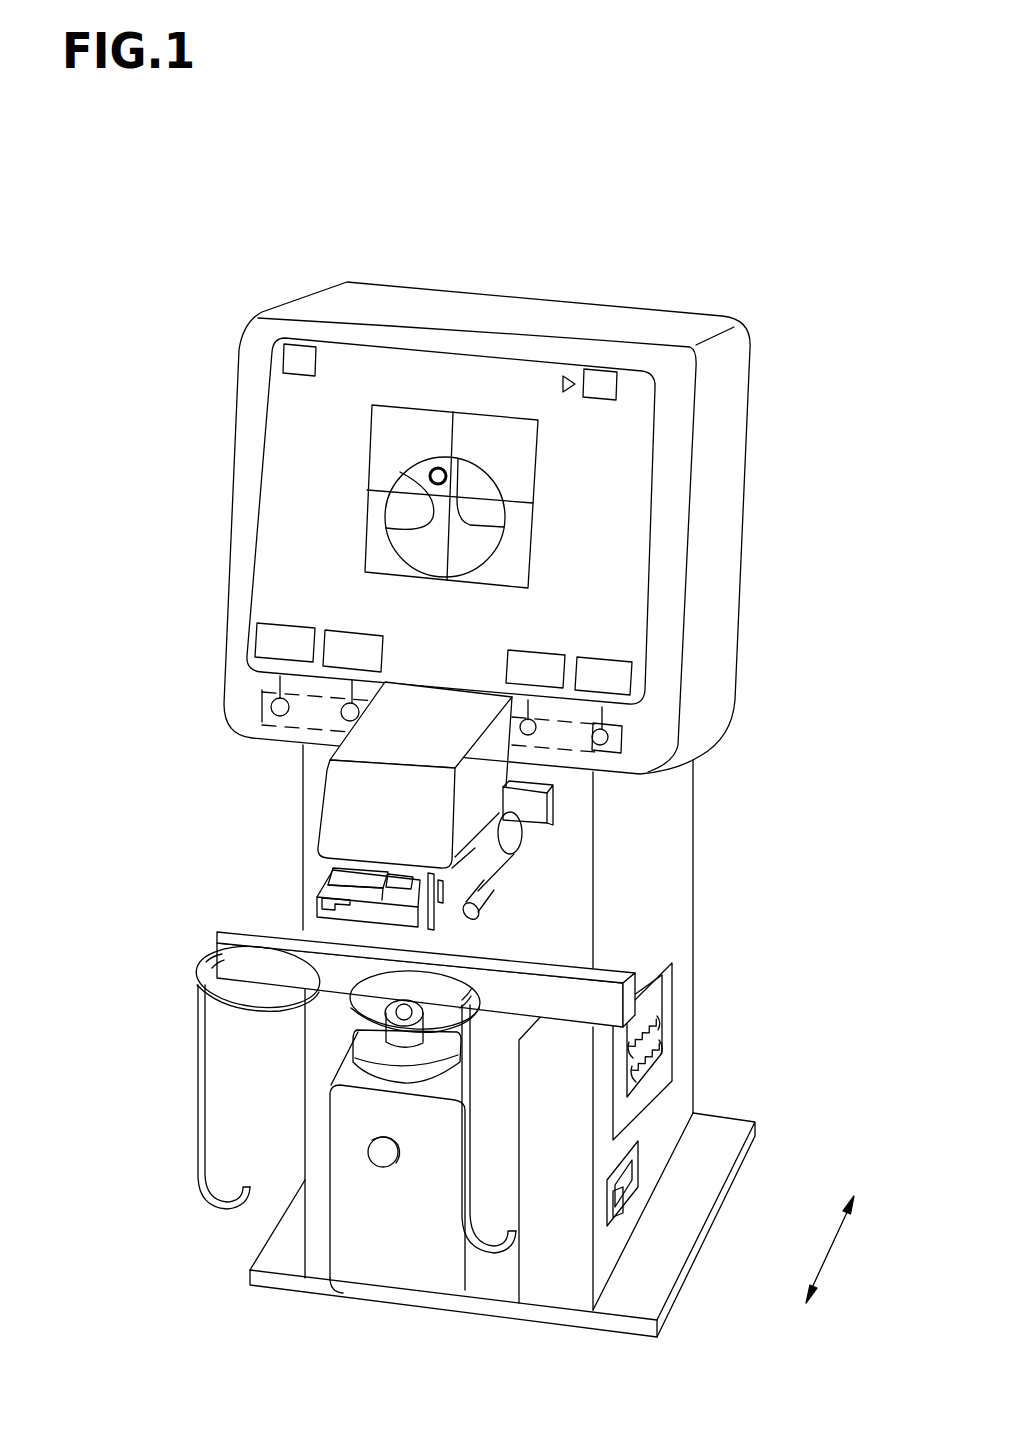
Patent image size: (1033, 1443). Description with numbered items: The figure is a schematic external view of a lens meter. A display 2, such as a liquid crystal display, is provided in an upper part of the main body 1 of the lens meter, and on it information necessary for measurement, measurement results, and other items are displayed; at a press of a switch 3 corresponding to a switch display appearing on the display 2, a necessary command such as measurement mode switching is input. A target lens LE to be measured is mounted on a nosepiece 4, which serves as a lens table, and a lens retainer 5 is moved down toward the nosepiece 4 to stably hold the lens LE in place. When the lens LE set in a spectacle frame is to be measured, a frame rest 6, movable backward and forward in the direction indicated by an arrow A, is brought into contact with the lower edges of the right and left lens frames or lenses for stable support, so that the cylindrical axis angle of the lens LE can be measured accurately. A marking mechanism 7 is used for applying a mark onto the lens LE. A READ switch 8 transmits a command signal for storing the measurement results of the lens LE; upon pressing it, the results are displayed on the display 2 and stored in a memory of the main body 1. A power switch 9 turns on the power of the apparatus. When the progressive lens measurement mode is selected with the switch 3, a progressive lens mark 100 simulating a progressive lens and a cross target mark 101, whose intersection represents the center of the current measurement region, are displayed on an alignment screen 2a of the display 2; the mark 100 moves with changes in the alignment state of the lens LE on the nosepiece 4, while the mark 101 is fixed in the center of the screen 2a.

The main body 1 is at (646, 256).
The display 2 is at (285, 578).
The alignment screen 2a is at (403, 407).
The switch 3 is at (262, 700).
The nosepiece 4 is at (372, 1052).
The lens retainer 5 is at (320, 873).
The frame rest 6 is at (232, 935).
The marking mechanism 7 is at (520, 866).
The READ switch 8 is at (377, 1166).
The power switch 9 is at (615, 1190).
The progressive lens mark 100 is at (434, 467).
The cross target mark 101 is at (456, 495).
The target lens LE is at (437, 987).
The arrow A is at (836, 1249).